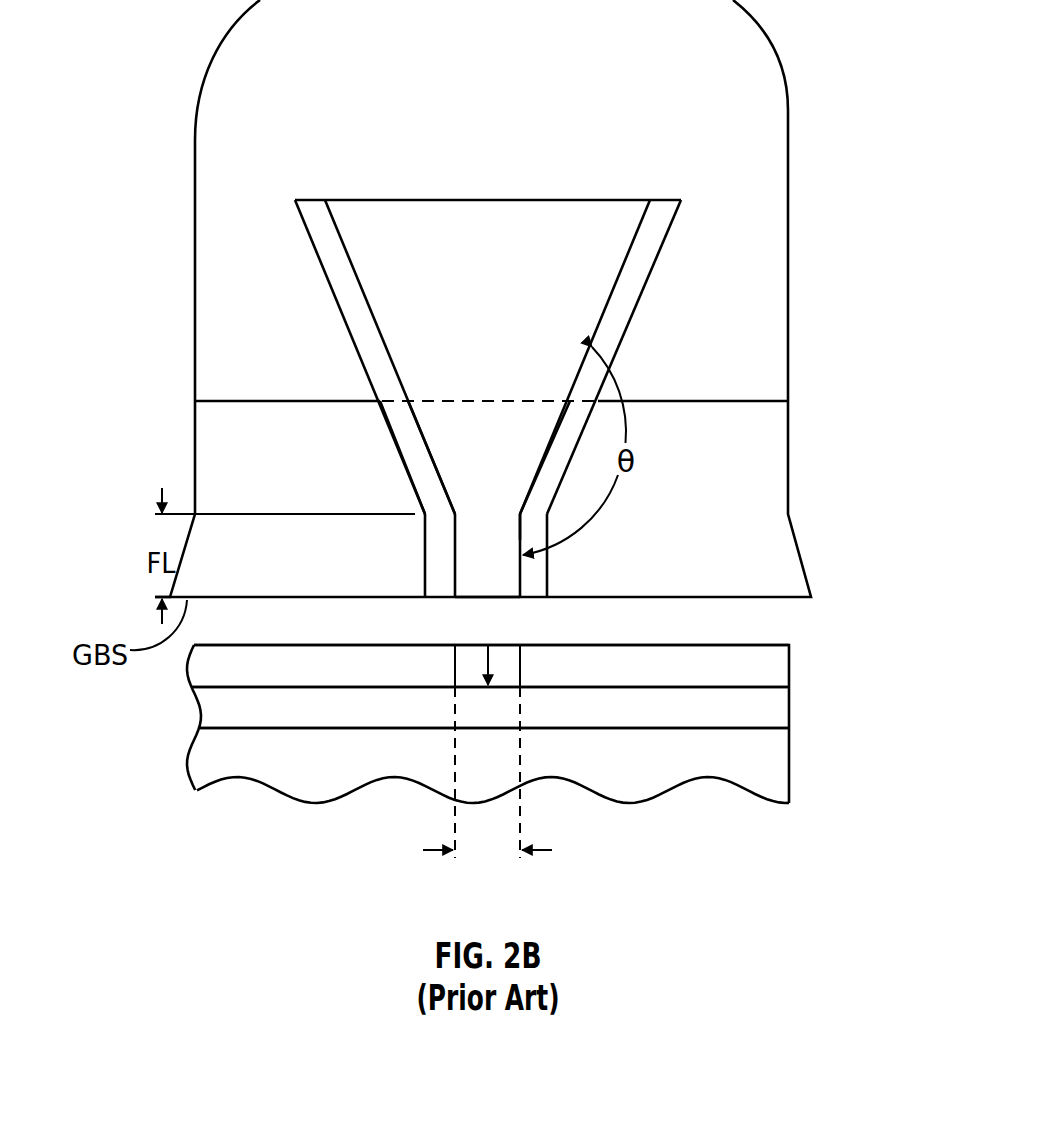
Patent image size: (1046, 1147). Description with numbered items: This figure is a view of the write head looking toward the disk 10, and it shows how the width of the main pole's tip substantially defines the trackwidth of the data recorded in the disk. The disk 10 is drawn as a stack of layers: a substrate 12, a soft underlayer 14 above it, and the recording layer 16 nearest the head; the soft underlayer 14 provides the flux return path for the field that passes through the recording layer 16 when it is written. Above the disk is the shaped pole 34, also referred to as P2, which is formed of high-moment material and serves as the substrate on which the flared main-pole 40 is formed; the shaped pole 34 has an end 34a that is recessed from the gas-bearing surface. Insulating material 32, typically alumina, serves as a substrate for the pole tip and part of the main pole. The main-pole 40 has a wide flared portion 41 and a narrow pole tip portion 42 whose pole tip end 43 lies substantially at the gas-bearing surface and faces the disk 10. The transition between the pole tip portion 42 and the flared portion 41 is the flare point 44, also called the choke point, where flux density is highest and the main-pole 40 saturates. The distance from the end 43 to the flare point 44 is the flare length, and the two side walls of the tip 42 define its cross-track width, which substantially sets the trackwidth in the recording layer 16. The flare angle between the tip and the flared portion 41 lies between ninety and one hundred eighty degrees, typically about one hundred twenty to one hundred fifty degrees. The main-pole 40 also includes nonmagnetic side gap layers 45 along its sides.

The disk 10 is at (455, 768).
The substrate 12 is at (210, 760).
The SUL 14 is at (210, 704).
The RL 16 is at (210, 659).
The insulating material 32 is at (773, 493).
The shaped pole 34 is at (779, 217).
The end 34a is at (670, 401).
The flared main-pole 40 is at (381, 200).
The flared portion 41 is at (420, 414).
The pole tip portion 42 is at (477, 575).
The pole tip end 43 is at (490, 600).
The flare point 44 is at (518, 513).
The nonmagnetic side gap layers 45 is at (327, 260).